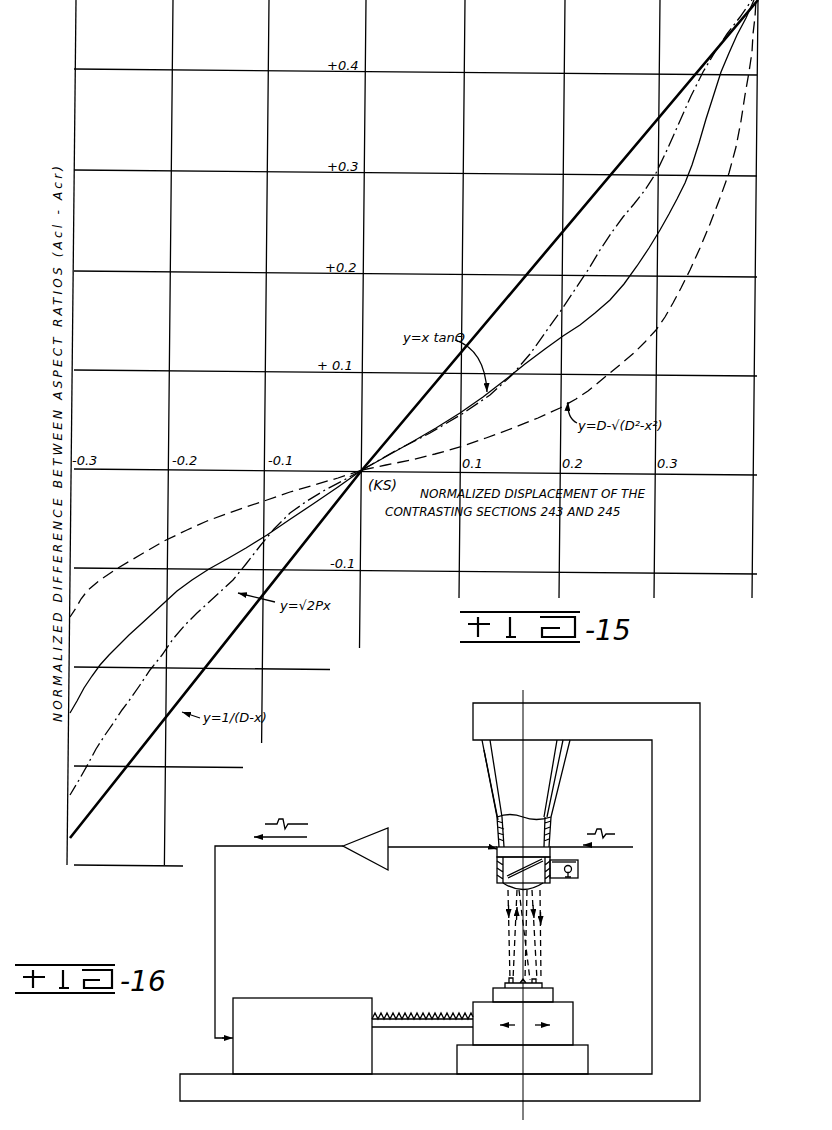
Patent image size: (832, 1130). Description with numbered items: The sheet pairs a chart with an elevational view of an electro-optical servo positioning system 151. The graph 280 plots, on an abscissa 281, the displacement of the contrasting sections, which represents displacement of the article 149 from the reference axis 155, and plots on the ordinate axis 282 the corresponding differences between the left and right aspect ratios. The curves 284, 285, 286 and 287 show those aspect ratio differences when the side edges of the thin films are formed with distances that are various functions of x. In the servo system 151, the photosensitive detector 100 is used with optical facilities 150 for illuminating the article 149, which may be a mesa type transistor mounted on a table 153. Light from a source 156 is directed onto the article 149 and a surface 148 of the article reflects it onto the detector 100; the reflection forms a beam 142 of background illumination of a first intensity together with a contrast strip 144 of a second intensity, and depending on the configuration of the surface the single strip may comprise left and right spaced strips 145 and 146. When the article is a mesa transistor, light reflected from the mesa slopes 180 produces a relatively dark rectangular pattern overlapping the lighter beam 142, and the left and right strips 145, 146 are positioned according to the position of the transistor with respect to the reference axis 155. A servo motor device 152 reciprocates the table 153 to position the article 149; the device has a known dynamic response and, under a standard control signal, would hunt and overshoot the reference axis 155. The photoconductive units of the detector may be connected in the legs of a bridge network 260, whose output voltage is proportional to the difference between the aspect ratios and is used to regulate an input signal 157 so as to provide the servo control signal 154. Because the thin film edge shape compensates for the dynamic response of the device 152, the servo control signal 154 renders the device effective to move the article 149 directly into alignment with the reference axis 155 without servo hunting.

In FIG. 15, the graph 280 is at (149, 51).
In FIG. 15, the abscissa 281 is at (143, 467).
In FIG. 15, the ordinate axis 282 is at (77, 232).
In FIG. 15, the curve 284 is at (692, 272).
In FIG. 15, the curve 285 is at (676, 211).
In FIG. 15, the curve 286 is at (623, 210).
In FIG. 15, the curve 287 is at (595, 186).
In FIG. 16, the photosensitive detector 100 is at (518, 846).
In FIG. 16, the bridge network 260 is at (496, 845).
In FIG. 16, the light source 156 is at (580, 868).
In FIG. 16, the optical facilities 150 is at (561, 880).
In FIG. 16, the input signal 157 is at (608, 833).
In FIG. 16, the servo control signal 154 is at (280, 826).
In FIG. 16, the electro-optical servo positioning system 151 is at (212, 921).
In FIG. 16, the servo motor device 152 is at (282, 997).
In FIG. 16, the table 153 is at (568, 1028).
In FIG. 16, the reference axis 155 is at (523, 1068).
In FIG. 16, the article 149 is at (553, 997).
In FIG. 16, the mesa slopes 180 is at (505, 982).
In FIG. 16, the beam of background illumination 142 is at (512, 928).
In FIG. 16, the contrast strip 144 is at (516, 941).
In FIG. 16, the left contrast strip 145 is at (535, 943).
In FIG. 16, the right contrast strip 146 is at (528, 961).
In FIG. 16, the surface 148 is at (510, 978).